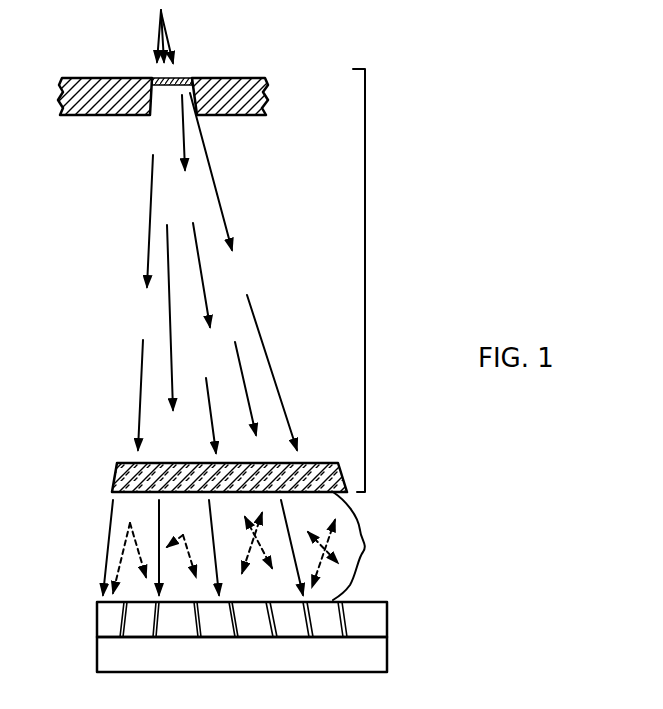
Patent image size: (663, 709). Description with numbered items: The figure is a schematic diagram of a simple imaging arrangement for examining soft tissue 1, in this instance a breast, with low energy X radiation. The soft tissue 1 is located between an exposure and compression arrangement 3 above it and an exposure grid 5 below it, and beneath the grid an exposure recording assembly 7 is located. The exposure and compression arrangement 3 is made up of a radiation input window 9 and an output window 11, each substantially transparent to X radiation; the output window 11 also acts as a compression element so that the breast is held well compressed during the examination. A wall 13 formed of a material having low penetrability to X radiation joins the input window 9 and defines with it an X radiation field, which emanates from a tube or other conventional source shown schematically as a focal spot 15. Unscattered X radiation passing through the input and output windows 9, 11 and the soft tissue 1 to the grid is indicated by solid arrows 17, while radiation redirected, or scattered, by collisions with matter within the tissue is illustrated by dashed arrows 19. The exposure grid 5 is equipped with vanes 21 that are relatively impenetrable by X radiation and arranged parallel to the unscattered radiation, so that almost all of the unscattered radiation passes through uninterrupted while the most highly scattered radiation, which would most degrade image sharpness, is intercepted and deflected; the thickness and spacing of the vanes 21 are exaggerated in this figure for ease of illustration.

The soft tissue 1 is at (366, 562).
The exposure and compression arrangement 3 is at (365, 270).
The exposure grid 5 is at (256, 619).
The exposure recording assembly 7 is at (388, 655).
The radiation input window 9 is at (168, 86).
The output window 11 is at (248, 463).
The wall 13 is at (248, 78).
The focal spot 15 is at (163, 20).
The solid arrows 17 is at (170, 318).
The dashed arrows 19 is at (246, 546).
The vanes 21 is at (303, 614).